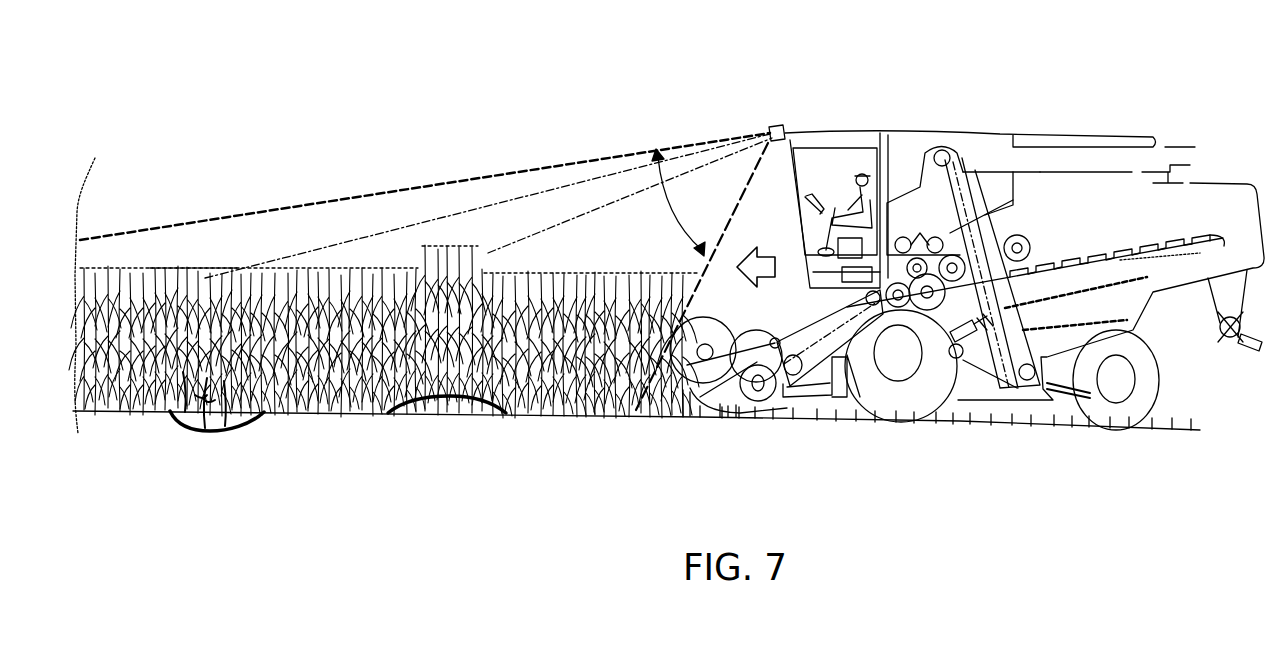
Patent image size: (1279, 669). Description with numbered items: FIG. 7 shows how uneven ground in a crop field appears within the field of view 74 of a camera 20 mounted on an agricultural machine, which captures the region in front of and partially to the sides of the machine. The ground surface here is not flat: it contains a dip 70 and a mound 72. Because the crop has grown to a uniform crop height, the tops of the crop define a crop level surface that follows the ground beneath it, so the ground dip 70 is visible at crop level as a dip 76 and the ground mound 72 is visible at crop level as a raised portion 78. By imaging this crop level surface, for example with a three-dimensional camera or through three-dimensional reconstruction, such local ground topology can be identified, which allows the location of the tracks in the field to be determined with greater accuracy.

The camera 20 is at (772, 125).
The dip 70 is at (218, 449).
The mound 72 is at (450, 423).
The field of view 74 is at (670, 210).
The dip 76 is at (191, 281).
The raised portion 78 is at (423, 233).